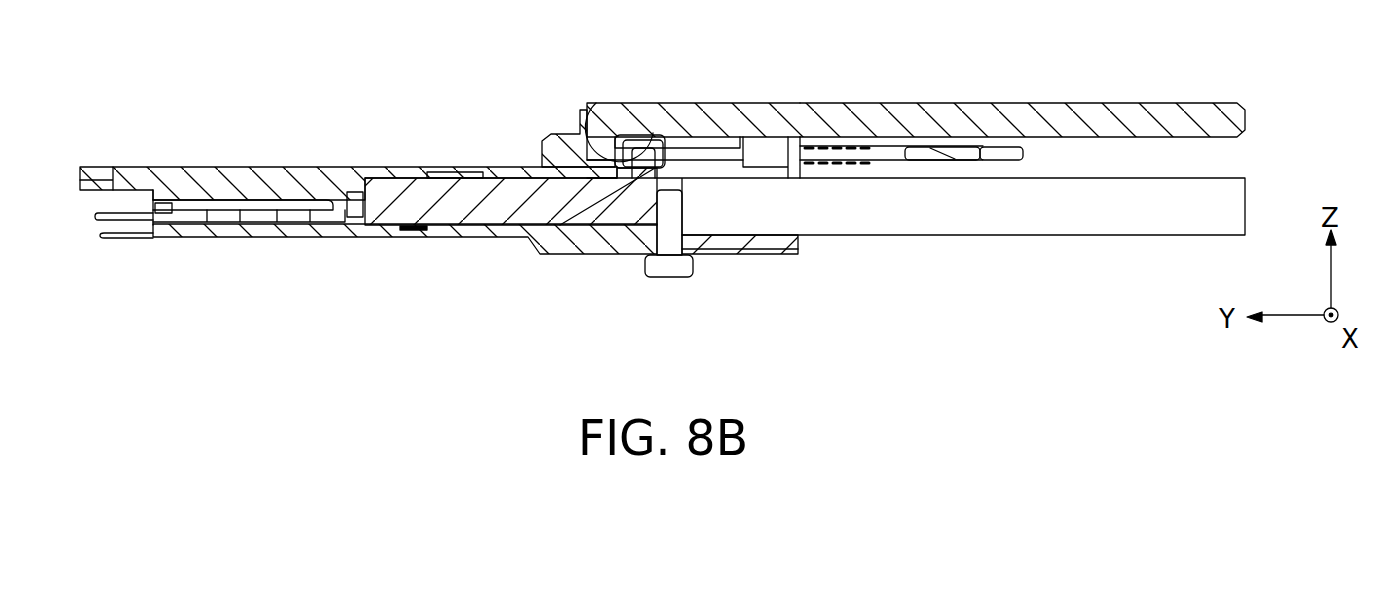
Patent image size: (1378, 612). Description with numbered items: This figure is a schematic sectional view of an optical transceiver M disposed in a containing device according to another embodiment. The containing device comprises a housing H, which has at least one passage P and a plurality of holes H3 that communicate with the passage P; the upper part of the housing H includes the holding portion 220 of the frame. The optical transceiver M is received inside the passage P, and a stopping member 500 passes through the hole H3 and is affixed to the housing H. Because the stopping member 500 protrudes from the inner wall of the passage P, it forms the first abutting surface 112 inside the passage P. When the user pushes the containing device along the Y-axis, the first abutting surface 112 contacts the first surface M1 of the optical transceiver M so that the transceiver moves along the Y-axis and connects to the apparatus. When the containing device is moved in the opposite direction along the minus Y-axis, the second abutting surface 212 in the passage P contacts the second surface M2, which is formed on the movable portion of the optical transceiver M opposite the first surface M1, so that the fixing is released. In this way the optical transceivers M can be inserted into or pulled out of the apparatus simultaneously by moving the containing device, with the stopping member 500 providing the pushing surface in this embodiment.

The optical transceiver M is at (439, 195).
The first surface M1 is at (662, 183).
The second surface M2 is at (587, 103).
The housing H is at (941, 201).
The hole H3 is at (694, 259).
The passage P is at (769, 175).
The second abutting surface 212 is at (652, 138).
The holding portion 220 is at (1195, 106).
The stopping member 500 is at (668, 209).
The first abutting surface 112 is at (657, 236).